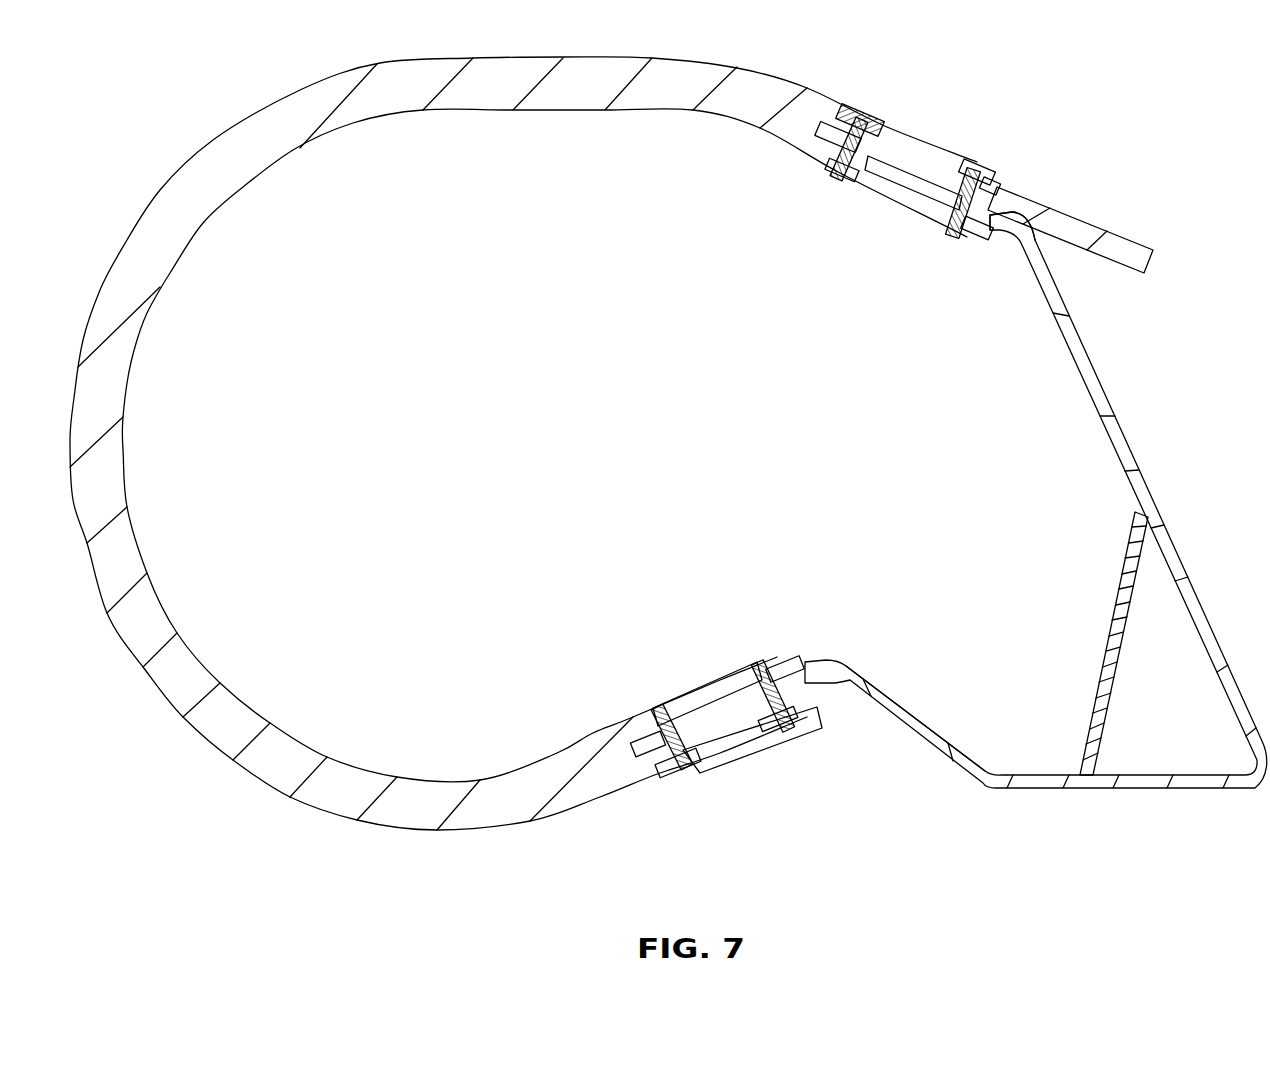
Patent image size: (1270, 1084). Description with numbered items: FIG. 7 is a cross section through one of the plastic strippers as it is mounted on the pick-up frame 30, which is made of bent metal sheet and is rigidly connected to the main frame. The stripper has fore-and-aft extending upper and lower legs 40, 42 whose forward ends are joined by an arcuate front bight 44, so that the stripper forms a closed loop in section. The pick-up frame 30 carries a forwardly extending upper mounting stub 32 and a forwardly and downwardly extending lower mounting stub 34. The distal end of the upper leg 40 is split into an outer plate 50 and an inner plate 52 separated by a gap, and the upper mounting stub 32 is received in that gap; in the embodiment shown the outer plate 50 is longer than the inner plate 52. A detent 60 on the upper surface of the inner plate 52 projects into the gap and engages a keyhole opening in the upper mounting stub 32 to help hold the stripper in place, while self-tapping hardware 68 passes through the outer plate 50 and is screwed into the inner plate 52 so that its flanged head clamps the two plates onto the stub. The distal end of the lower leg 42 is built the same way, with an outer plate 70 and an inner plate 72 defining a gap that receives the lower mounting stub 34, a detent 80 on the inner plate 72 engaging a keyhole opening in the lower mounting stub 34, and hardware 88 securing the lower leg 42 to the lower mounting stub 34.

The pick-up frame 30 is at (1200, 598).
The upper mounting stub 32 is at (1003, 227).
The lower mounting stub 34 is at (897, 702).
The upper leg 40 is at (815, 91).
The lower leg 42 is at (565, 751).
The arcuate front bight 44 is at (125, 462).
The outer plate 50 is at (1100, 222).
The inner plate 52 is at (891, 204).
The detent 60 is at (1015, 196).
The self-tapping hardware 68 is at (978, 170).
The outer plate 70 is at (740, 750).
The inner plate 72 is at (727, 674).
The detent 80 is at (807, 678).
The hardware 88 is at (795, 735).